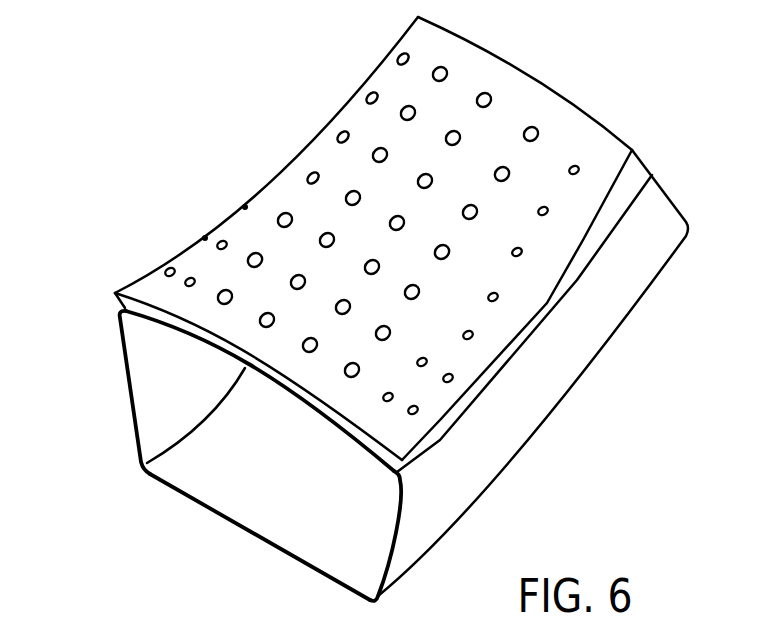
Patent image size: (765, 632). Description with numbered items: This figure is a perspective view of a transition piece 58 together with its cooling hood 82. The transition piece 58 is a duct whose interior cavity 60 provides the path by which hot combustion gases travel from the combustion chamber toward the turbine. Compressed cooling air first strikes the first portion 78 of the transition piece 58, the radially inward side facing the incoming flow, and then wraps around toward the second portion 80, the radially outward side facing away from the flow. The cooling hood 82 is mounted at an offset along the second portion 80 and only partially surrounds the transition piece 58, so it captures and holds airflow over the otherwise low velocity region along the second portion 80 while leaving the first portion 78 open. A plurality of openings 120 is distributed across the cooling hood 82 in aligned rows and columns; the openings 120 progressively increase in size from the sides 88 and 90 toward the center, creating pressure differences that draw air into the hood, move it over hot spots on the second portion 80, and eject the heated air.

The transition piece 58 is at (594, 428).
The interior cavity 60 is at (263, 464).
The first portion 78 is at (223, 515).
The second portion 80 is at (144, 311).
The cooling hood 82 is at (585, 137).
The side of the cooling hood 88 is at (178, 248).
The side of the cooling hood 90 is at (463, 394).
The openings 120 is at (453, 130).